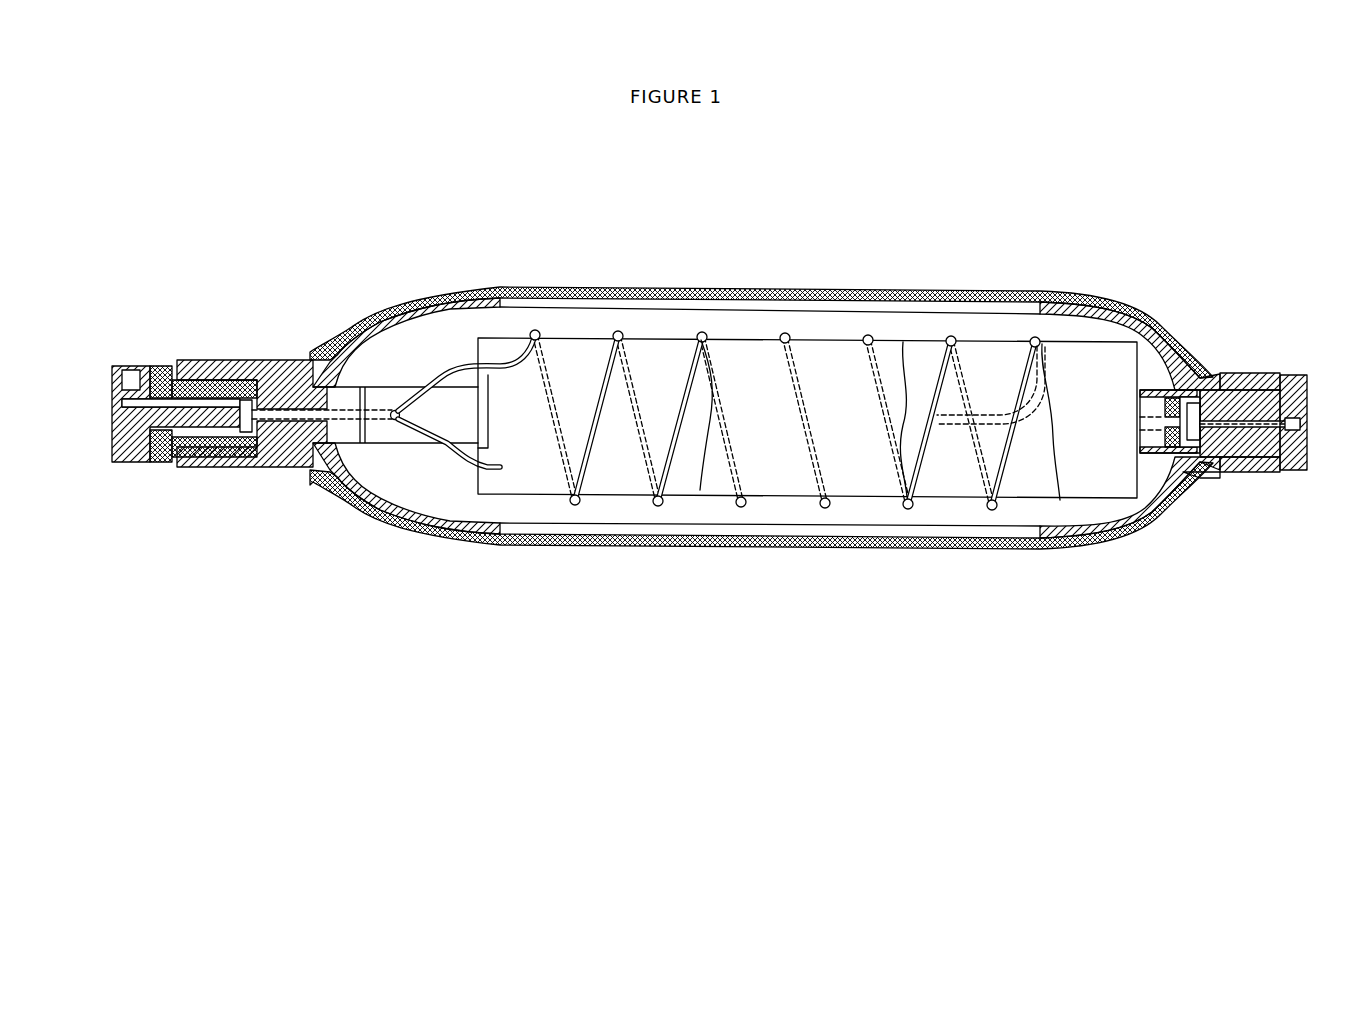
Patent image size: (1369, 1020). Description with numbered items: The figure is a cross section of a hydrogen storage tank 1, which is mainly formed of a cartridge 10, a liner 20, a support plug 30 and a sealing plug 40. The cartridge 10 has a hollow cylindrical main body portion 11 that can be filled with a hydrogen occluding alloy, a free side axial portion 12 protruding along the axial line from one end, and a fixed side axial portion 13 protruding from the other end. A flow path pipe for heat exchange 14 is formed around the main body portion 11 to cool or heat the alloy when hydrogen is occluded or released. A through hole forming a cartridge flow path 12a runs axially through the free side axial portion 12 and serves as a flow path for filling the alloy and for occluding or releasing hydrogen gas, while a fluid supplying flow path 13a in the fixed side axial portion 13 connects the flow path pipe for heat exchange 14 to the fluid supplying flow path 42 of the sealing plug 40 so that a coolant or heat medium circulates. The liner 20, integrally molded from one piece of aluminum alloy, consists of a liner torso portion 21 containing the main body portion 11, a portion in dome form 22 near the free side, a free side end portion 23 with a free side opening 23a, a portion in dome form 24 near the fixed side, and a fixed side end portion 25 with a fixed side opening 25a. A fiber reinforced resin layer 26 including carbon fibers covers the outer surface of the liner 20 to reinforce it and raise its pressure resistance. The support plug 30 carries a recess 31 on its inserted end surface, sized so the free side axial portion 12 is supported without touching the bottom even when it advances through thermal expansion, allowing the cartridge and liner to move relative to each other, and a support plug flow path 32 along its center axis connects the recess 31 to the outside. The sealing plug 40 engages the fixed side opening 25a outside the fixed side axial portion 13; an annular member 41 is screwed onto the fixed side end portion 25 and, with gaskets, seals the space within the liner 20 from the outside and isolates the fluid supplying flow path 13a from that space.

The hydrogen storage tank 1 is at (518, 557).
The cartridge 10 is at (466, 505).
The main body portion 11 is at (529, 486).
The free side axial portion 12 is at (1143, 440).
The cartridge flow path 12a is at (1153, 415).
The fixed side axial portion 13 is at (376, 432).
The fluid supplying flow path 13a is at (306, 417).
The flow path pipe for heat exchange 14 is at (952, 333).
The liner 20 is at (784, 271).
The liner torso portion 21 is at (623, 314).
The portion in dome form 22 is at (1108, 297).
The free side end portion 23 is at (1218, 475).
The free side opening 23a is at (1285, 485).
The portion in dome form 24 is at (374, 296).
The fixed side end portion 25 is at (224, 370).
The fixed side opening 25a is at (165, 480).
The fiber reinforced resin layer 26 is at (480, 289).
The support plug 30 is at (1200, 490).
The recess 31 is at (1226, 376).
The support plug flow path 32 is at (1289, 378).
The sealing plug 40 is at (113, 463).
The annular member 41 is at (157, 463).
The fluid supplying flow path 42 is at (143, 399).